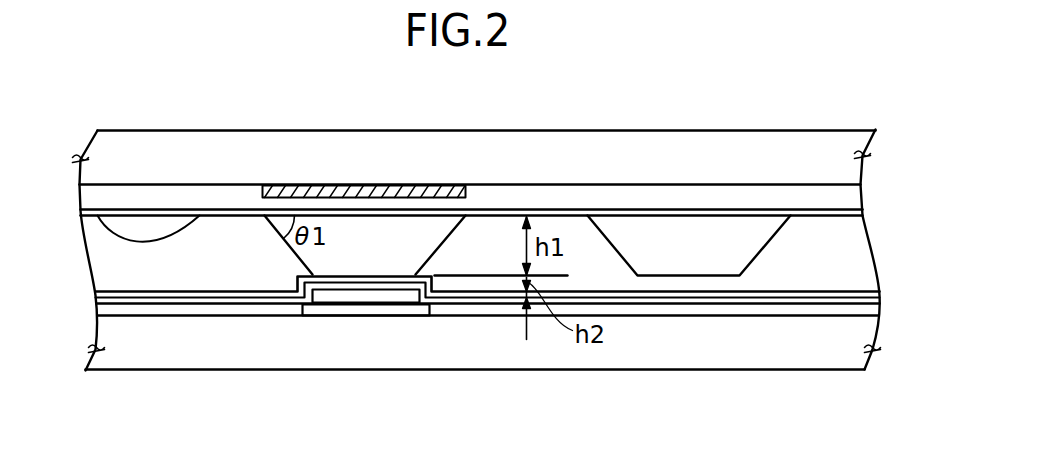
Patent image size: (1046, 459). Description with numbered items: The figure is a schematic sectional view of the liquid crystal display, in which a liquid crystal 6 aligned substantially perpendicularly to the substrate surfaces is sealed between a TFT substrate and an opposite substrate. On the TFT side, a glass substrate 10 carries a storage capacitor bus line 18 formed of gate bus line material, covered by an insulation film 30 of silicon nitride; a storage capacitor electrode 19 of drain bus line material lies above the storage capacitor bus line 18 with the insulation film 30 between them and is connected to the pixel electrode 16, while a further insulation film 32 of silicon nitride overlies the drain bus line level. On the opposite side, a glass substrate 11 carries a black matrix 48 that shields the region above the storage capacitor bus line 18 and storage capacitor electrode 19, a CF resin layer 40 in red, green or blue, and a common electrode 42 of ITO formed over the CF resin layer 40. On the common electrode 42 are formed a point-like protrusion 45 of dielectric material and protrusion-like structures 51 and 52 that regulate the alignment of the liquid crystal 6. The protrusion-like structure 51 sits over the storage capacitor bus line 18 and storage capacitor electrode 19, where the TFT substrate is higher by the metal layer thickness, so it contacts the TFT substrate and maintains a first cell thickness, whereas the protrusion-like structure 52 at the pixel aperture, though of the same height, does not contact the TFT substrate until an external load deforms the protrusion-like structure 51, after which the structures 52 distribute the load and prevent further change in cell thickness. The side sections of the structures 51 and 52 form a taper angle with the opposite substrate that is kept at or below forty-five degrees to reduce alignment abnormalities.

The glass substrate 10 is at (862, 360).
The glass substrate 11 is at (858, 176).
The pixel electrode 16 is at (876, 291).
The storage capacitor bus line 18 is at (403, 310).
The storage capacitor electrode 19 is at (355, 295).
The insulation film 30 is at (875, 310).
The insulation film 32 is at (876, 298).
The CF resin layer 40 is at (860, 202).
The common electrode 42 is at (862, 212).
The point-like protrusion 45 is at (175, 227).
The black matrix 48 is at (428, 183).
The protrusion-like structure 51 is at (435, 242).
The protrusion-like structure 52 is at (755, 247).
The liquid crystal 6 is at (860, 237).